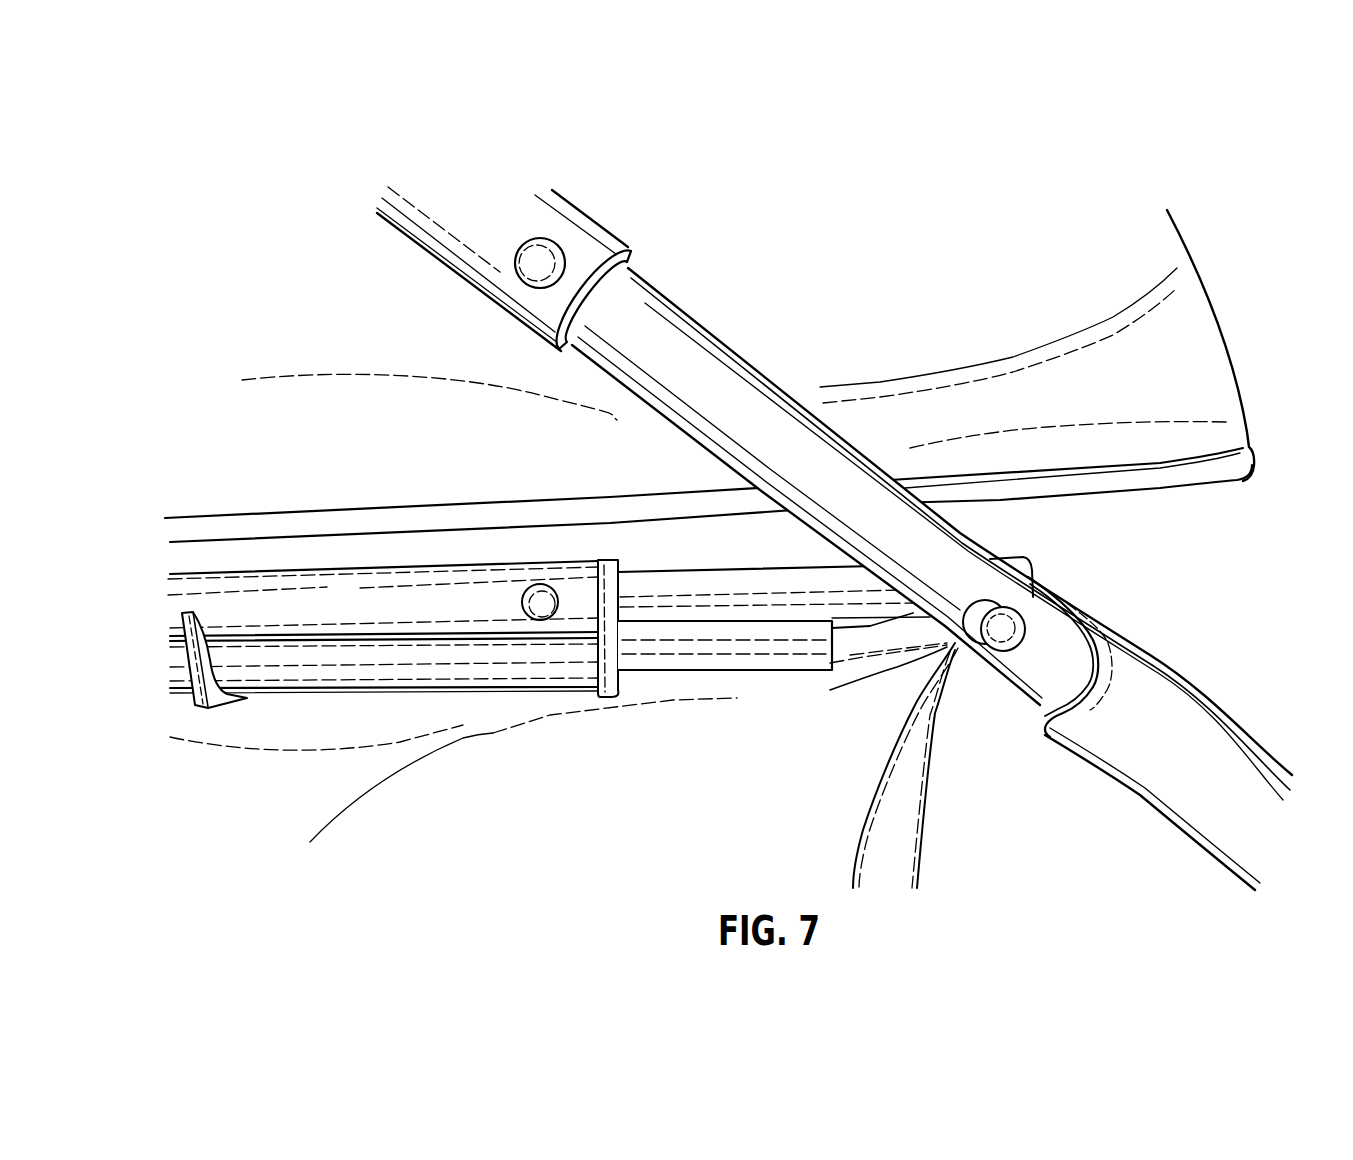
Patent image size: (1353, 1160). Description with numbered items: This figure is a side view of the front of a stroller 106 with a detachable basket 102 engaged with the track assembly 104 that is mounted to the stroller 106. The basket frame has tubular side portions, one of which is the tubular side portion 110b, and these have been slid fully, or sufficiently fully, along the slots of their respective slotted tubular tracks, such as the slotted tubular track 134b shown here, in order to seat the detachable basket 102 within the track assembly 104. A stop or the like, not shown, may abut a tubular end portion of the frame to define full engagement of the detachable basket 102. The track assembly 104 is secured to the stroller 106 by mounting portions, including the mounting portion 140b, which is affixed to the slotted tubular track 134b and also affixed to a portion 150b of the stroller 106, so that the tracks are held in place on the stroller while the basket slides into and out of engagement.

The detachable basket 102 is at (990, 838).
The track assembly 104 is at (236, 734).
The stroller 106 is at (973, 535).
The tubular side portion 110b is at (688, 668).
The slotted tubular track 134b is at (608, 656).
The mounting portion 140b is at (335, 690).
The portion of stroller 150b is at (708, 565).